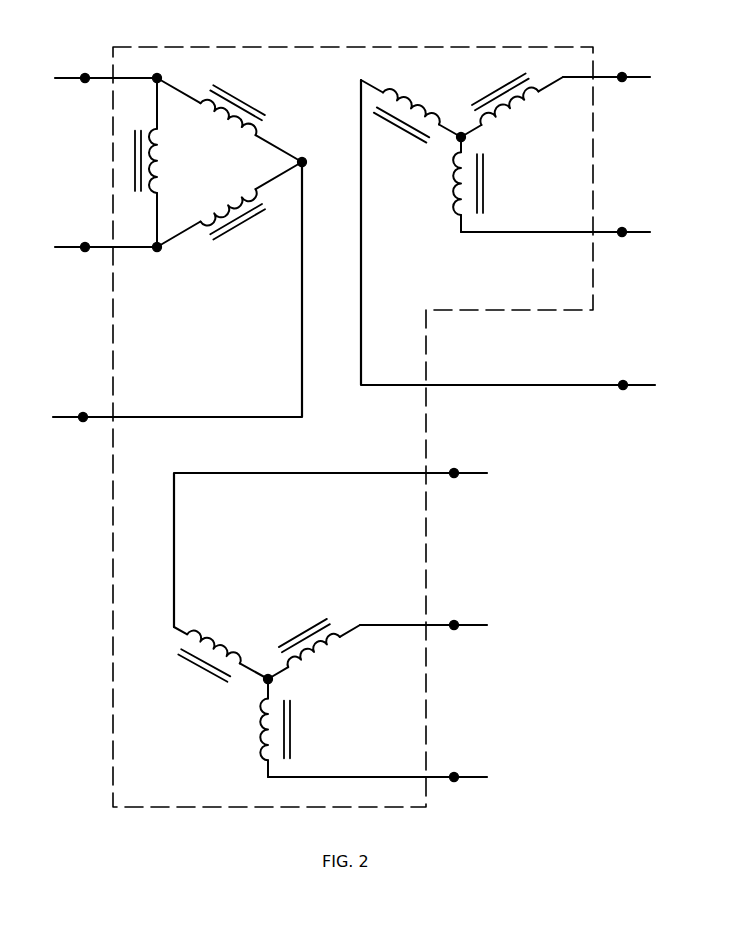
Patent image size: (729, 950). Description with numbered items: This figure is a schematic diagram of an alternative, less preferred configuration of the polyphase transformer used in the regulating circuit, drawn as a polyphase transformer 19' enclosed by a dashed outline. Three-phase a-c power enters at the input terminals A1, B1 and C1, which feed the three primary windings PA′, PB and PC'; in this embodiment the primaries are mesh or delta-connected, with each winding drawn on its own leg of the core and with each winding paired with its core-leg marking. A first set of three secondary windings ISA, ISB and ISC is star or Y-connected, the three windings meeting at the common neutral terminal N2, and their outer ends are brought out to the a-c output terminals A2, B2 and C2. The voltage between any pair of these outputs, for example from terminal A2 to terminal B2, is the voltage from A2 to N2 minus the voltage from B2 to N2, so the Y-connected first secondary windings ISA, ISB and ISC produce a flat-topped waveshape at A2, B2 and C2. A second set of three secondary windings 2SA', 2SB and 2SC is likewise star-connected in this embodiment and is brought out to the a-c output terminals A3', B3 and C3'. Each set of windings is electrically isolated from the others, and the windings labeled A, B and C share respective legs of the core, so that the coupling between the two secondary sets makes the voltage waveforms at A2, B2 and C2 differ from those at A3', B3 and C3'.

The polyphase transformer 19' is at (324, 427).
The input terminal phase A A1 is at (85, 78).
The input terminal phase B B1 is at (83, 417).
The input terminal phase C C1 is at (85, 247).
The primary winding phase A PA′ is at (213, 128).
The primary winding phase B PB is at (215, 205).
The primary winding phase C PC' is at (172, 162).
The first secondary winding phase A ISA is at (415, 103).
The first secondary winding phase B ISB is at (527, 107).
The first secondary winding phase C ISC is at (455, 187).
The neutral terminal N2 is at (468, 139).
The a-c output terminal A2 is at (623, 388).
The a-c output terminal B2 is at (622, 80).
The a-c output terminal C2 is at (622, 235).
The second secondary winding phase A 2SA' is at (224, 652).
The second secondary winding phase B 2SB is at (325, 655).
The second secondary winding phase C 2SC is at (262, 731).
The a-c output terminal A3' is at (339, 530).
The a-c output terminal B3 is at (456, 622).
The a-c output terminal C3' is at (385, 758).